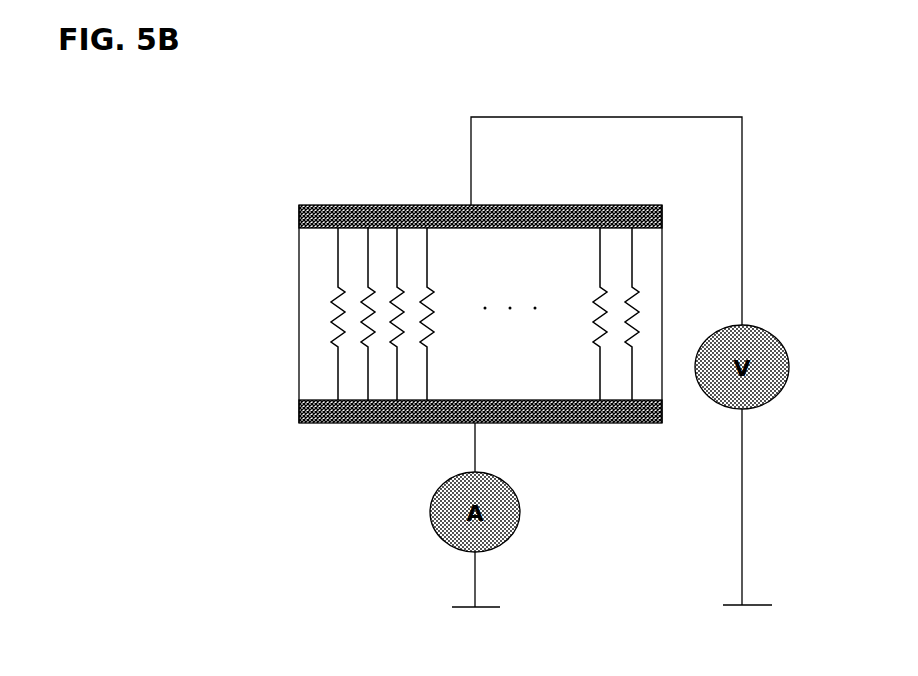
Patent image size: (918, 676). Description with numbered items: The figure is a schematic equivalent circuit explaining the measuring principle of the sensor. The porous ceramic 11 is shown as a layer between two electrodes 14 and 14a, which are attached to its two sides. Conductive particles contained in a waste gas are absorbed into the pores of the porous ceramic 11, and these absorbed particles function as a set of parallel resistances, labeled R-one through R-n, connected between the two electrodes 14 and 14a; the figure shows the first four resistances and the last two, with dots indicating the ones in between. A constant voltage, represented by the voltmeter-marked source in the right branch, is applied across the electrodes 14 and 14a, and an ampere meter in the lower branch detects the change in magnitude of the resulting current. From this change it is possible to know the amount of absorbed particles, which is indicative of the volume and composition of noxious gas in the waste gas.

The porous ceramic 11 is at (663, 268).
The electrode 14 is at (365, 205).
The electrode 14a is at (583, 423).